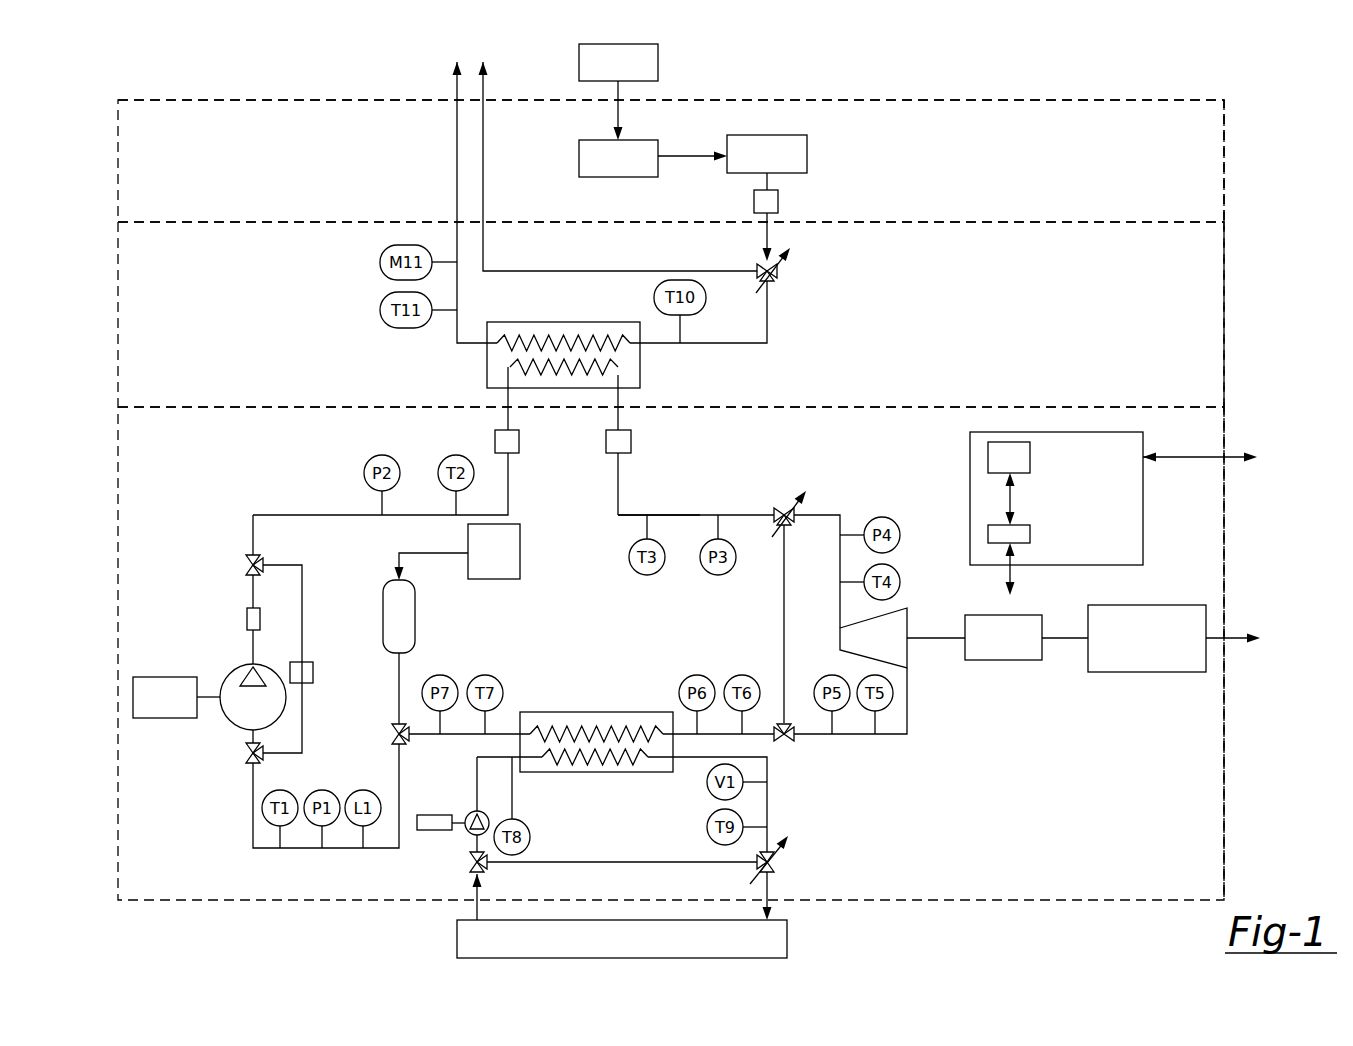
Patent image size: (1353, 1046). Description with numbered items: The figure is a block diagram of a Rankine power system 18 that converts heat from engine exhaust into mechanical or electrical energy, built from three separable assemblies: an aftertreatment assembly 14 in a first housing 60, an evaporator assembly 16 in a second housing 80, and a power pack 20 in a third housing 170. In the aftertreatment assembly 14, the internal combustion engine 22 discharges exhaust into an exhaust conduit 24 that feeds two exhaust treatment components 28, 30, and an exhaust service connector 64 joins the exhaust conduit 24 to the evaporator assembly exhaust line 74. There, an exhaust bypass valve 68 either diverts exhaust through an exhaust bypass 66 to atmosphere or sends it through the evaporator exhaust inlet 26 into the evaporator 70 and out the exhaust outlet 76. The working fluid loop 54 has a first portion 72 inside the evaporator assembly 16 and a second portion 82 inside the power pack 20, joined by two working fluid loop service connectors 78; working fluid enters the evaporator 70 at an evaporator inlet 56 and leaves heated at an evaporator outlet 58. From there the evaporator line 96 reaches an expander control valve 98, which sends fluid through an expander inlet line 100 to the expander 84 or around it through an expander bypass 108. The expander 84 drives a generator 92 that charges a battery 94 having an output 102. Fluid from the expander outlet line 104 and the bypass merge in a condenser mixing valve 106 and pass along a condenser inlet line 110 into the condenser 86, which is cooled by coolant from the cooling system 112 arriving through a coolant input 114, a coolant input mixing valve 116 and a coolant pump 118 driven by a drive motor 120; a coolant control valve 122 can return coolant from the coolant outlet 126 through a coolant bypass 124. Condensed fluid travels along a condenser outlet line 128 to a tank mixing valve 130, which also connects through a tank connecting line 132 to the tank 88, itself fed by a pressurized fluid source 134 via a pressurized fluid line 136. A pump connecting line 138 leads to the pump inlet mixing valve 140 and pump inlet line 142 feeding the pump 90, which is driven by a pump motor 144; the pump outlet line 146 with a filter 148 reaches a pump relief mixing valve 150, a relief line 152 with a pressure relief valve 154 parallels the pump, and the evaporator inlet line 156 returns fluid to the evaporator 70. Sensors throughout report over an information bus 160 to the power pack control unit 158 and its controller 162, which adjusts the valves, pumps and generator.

The aftertreatment assembly 14 is at (1232, 163).
The evaporator assembly 16 is at (1232, 318).
The power system 18 is at (104, 180).
The power pack 20 is at (1232, 430).
The internal combustion engine 22 is at (630, 74).
The exhaust conduit 24 is at (618, 88).
The evaporator exhaust inlet 26 is at (768, 326).
The exhaust treatment component 28 is at (630, 170).
The exhaust treatment component 30 is at (779, 164).
The working fluid loop 54 is at (632, 422).
The evaporator inlet 56 is at (492, 398).
The evaporator outlet 58 is at (620, 396).
The first housing 60 is at (1224, 182).
The exhaust service connector 64 is at (778, 205).
The exhaust bypass 66 is at (618, 268).
The exhaust bypass valve 68 is at (779, 280).
The evaporator 70 is at (640, 350).
The first portion 72 is at (505, 395).
The evaporator assembly exhaust line 74 is at (778, 236).
The exhaust outlet 76 is at (457, 237).
The working fluid loop service connector 78 is at (495, 443).
The second housing 80 is at (1224, 332).
The second portion 82 is at (632, 482).
The expander 84 is at (890, 645).
The condenser 86 is at (580, 712).
The tank 88 is at (412, 629).
The pump 90 is at (235, 680).
The generator 92 is at (1015, 650).
The battery 94 is at (1159, 650).
The evaporator line 96 is at (706, 515).
The expander control valve 98 is at (784, 508).
The expander inlet line 100 is at (840, 515).
The output 102 is at (1248, 660).
The expander outlet line 104 is at (890, 735).
The condenser mixing valve 106 is at (785, 745).
The expander bypass 108 is at (784, 640).
The condenser inlet line 110 is at (708, 740).
The cooling system 112 is at (444, 950).
The coolant input 114 is at (478, 908).
The coolant input mixing valve 116 is at (470, 862).
The coolant pump 118 is at (468, 812).
The drive motor 120 is at (432, 815).
The coolant control valve 122 is at (778, 862).
The coolant bypass 124 is at (617, 862).
The coolant outlet 126 is at (768, 890).
The condenser outlet line 128 is at (505, 732).
The tank mixing valve 130 is at (392, 736).
The tank connecting line 132 is at (399, 664).
The pressurized fluid source 134 is at (504, 562).
The pressurized fluid line 136 is at (430, 553).
The pump connecting line 138 is at (268, 850).
The pump inlet mixing valve 140 is at (250, 760).
The pump inlet line 142 is at (253, 747).
The pump motor 144 is at (174, 708).
The pump outlet line 146 is at (253, 655).
The filter 148 is at (247, 615).
The pump relief mixing valve 150 is at (253, 562).
The relief line 152 is at (302, 618).
The pressure relief valve 154 is at (313, 672).
The evaporator inlet line 156 is at (314, 515).
The power pack control unit 158 is at (1050, 432).
The information bus 160 is at (1030, 535).
The controller 162 is at (1030, 462).
The third housing 170 is at (1224, 495).